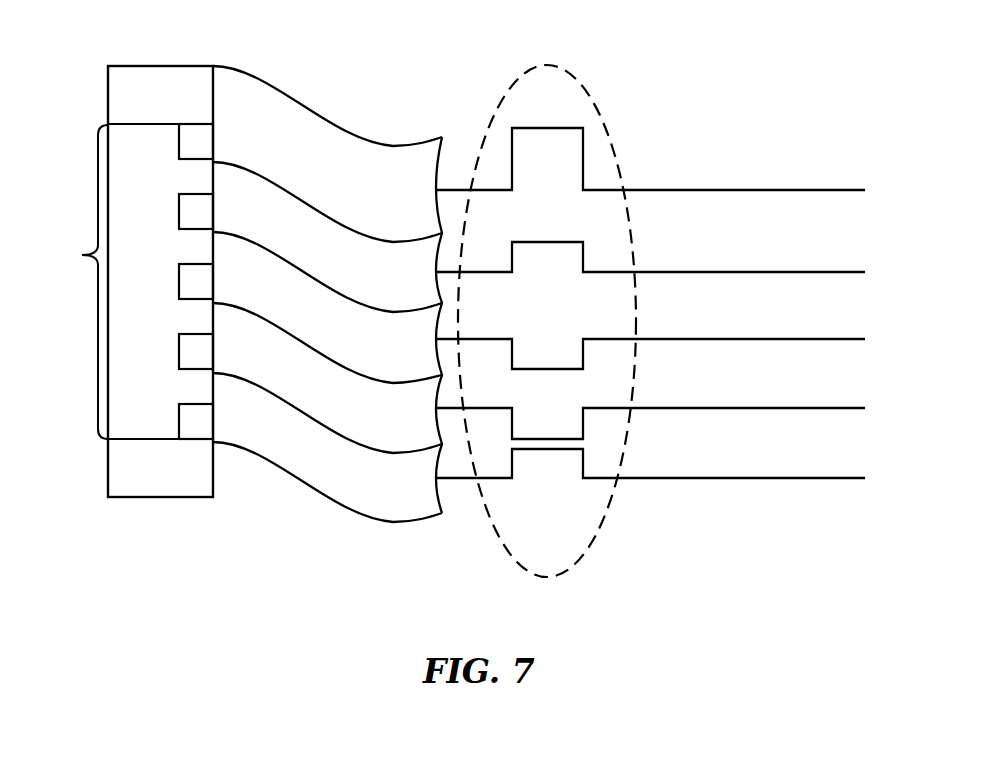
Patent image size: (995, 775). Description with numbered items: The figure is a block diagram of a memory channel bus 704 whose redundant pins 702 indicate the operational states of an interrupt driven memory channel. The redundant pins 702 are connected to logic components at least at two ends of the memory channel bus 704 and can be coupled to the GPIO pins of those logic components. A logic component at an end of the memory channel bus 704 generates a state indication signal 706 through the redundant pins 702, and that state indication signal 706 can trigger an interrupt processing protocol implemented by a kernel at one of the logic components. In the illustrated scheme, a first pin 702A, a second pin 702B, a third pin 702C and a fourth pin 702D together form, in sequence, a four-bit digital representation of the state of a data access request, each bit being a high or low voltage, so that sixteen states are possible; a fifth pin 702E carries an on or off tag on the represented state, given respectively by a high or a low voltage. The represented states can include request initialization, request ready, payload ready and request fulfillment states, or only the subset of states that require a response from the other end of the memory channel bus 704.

The redundant pins 702 is at (75, 282).
The first pin 702A is at (187, 124).
The second pin 702B is at (187, 194).
The third pin 702C is at (187, 264).
The fourth pin 702D is at (187, 334).
The fifth pin 702E is at (187, 404).
The memory channel bus 704 is at (100, 464).
The state indication signal 706 is at (586, 87).